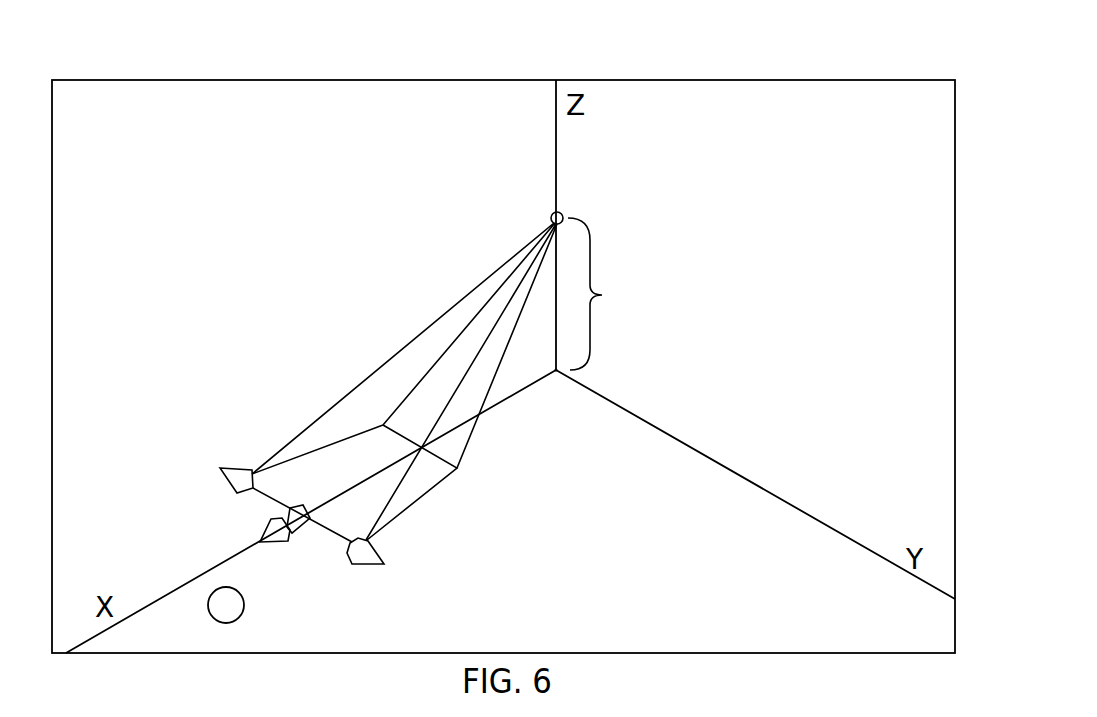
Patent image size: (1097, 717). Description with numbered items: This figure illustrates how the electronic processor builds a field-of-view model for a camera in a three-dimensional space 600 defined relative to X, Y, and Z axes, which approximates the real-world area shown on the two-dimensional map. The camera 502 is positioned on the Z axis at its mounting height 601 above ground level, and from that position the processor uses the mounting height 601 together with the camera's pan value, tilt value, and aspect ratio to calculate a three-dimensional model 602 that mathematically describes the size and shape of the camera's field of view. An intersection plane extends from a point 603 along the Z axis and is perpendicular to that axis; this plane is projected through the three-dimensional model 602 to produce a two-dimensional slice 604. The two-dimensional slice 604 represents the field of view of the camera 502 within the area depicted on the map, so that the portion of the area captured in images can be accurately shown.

The three-dimensional space 600 is at (125, 50).
The camera 502 is at (550, 217).
The mounting height 601 is at (602, 295).
The three-dimensional model 602 is at (392, 342).
The point 603 is at (562, 380).
The two-dimensional slice 604 is at (427, 505).